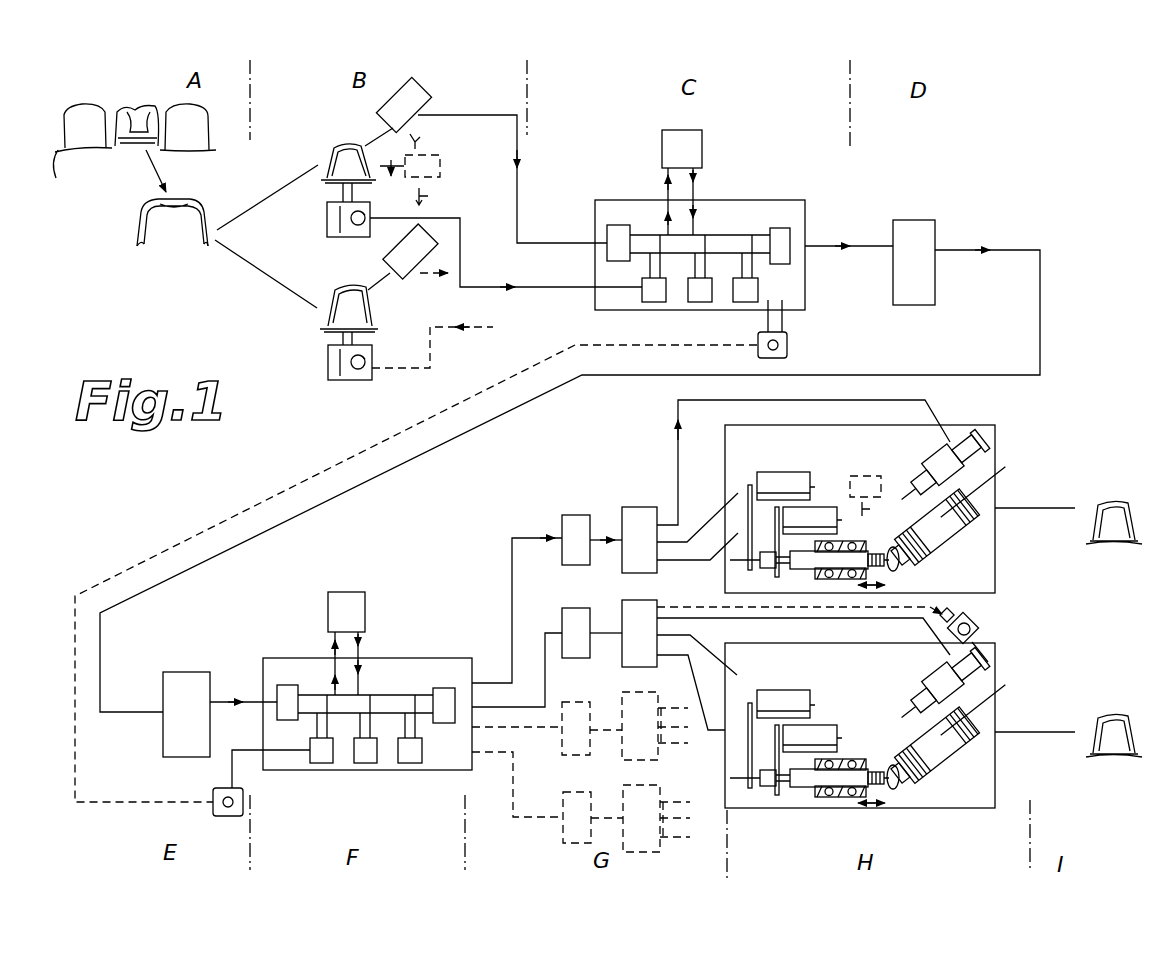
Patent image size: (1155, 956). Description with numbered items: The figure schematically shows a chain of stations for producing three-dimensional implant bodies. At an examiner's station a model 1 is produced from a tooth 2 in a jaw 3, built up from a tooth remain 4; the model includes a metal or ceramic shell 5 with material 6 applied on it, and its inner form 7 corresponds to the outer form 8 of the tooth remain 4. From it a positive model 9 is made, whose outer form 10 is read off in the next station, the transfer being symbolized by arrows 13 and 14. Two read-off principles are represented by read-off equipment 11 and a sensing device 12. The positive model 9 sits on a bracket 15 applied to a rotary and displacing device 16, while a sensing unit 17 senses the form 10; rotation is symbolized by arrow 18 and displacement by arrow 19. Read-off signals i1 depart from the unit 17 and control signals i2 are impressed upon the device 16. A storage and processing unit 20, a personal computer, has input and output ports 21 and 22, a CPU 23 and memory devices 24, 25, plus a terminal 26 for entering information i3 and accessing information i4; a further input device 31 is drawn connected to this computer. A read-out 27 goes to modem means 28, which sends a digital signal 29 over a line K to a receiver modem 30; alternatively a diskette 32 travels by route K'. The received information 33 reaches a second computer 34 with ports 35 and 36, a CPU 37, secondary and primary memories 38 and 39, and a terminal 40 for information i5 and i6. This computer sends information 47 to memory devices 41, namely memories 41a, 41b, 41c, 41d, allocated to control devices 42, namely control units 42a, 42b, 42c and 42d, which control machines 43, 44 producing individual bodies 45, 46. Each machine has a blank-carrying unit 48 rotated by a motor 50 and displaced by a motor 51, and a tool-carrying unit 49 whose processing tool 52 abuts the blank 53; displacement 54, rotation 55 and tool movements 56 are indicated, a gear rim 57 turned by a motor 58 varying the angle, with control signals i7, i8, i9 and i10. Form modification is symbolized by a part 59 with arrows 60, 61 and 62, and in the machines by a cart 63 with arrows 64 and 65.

The model 1 is at (151, 223).
The tooth 2 is at (107, 97).
The jaw 3 is at (100, 171).
The tooth remain 4 is at (143, 112).
The shell 5 is at (146, 243).
The material 6 is at (147, 206).
The inner form 7 is at (190, 240).
The outer form 8 is at (125, 108).
The positive model 9 is at (338, 148).
The outer form 10 is at (333, 150).
The read-off equipment 11 is at (327, 235).
The sensing device 12 is at (326, 360).
The arrow 13 is at (273, 196).
The arrow 14 is at (258, 268).
The bracket 15 is at (343, 194).
The rotary and displacing device 16 is at (344, 232).
The sensing unit 17 is at (418, 99).
The arrow 18 is at (358, 226).
The arrow 19 is at (332, 228).
The storage and processing unit 20 is at (699, 239).
The input port 21 is at (608, 233).
The output port 22 is at (790, 238).
The CPU 23 is at (650, 300).
The memory device 24 is at (695, 300).
The memory device 25 is at (745, 300).
The terminal 26 is at (668, 140).
The read-out 27 is at (849, 246).
The modem means 28 is at (908, 225).
The digital signal 29 is at (985, 250).
The receiver modem 30 is at (178, 677).
The input device 31 is at (792, 329).
The diskette 32 is at (230, 817).
The information 33 is at (241, 701).
The second computer 34 is at (367, 711).
The input port 35 is at (290, 686).
The output port 36 is at (444, 688).
The CPU 37 is at (322, 765).
The secondary memory 38 is at (366, 765).
The primary memory 39 is at (412, 765).
The terminal 40 is at (347, 594).
The memory device 41 is at (552, 531).
The memory 41a is at (562, 562).
The memory 41b is at (562, 628).
The memory 41c is at (562, 748).
The memory 41d is at (563, 835).
The control device 42 is at (616, 537).
The control unit 42a is at (623, 568).
The control unit 42b is at (624, 667).
The control unit 42c is at (622, 755).
The control unit 42d is at (663, 829).
The machine 43 is at (884, 506).
The machine 44 is at (880, 743).
The individual body 45 is at (1093, 503).
The individual body 46 is at (1110, 715).
The information 47 is at (545, 535).
The blank-carrying unit 48 is at (800, 574).
The tool-carrying unit 49 is at (947, 548).
The motor 50 is at (825, 506).
The motor 51 is at (772, 473).
The processing tool 52 is at (898, 585).
The blank 53 is at (887, 551).
The longitudinal displacement movement 54 is at (872, 808).
The rotational movement 55 is at (890, 778).
The longitudinal displacement movements 56 is at (988, 705).
The gear rim 57 is at (990, 672).
The motor 58 is at (978, 620).
The part 59 is at (443, 160).
The arrow 60 is at (392, 183).
The arrow 61 is at (432, 134).
The arrow 62 is at (439, 194).
The cart 63 is at (868, 476).
The arrow 64 is at (908, 506).
The arrow 65 is at (880, 509).
The read-off signals i1 is at (519, 166).
The control signals i2 is at (510, 286).
The information i3 is at (663, 184).
The information i4 is at (694, 215).
The information i5 is at (332, 647).
The information i6 is at (360, 674).
The control signal i7 is at (705, 562).
The control signal i8 is at (717, 517).
The control signal i9 is at (778, 619).
The control signal i10 is at (675, 422).
The line K is at (486, 440).
The alternative route K' is at (416, 573).